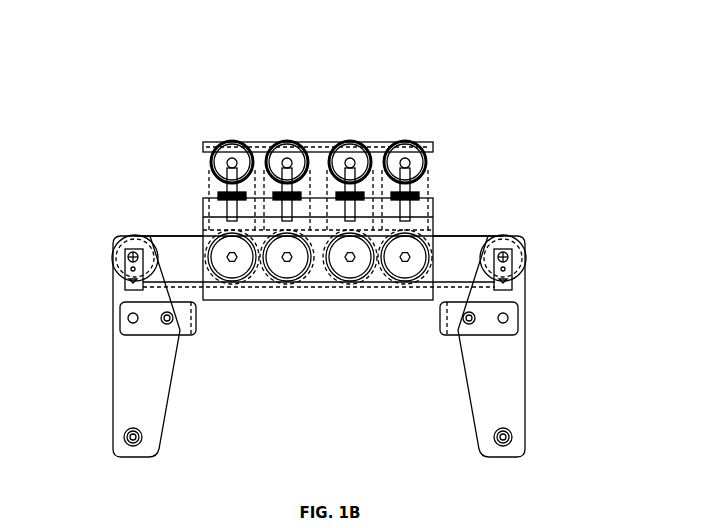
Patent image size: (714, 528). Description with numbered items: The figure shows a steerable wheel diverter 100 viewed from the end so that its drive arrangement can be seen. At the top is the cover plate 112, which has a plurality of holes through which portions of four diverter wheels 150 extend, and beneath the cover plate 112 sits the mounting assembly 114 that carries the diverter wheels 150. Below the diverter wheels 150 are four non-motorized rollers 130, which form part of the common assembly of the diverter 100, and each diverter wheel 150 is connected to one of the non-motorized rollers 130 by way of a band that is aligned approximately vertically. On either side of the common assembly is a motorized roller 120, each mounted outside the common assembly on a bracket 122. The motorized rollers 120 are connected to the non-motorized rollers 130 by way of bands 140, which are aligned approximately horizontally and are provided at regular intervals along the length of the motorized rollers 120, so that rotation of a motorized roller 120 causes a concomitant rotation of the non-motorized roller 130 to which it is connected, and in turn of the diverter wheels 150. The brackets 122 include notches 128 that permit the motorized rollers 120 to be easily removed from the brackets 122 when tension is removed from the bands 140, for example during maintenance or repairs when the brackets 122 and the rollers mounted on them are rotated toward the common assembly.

The steerable wheel diverter 100 is at (511, 83).
The cover plate 112 is at (437, 150).
The mounting assembly 114 is at (437, 205).
The motorized roller 120 is at (131, 256).
The bracket 122 is at (150, 398).
The notch 128 is at (125, 258).
The non-motorized roller 130 is at (232, 270).
The band 140 is at (183, 236).
The diverter wheel 150 is at (231, 140).